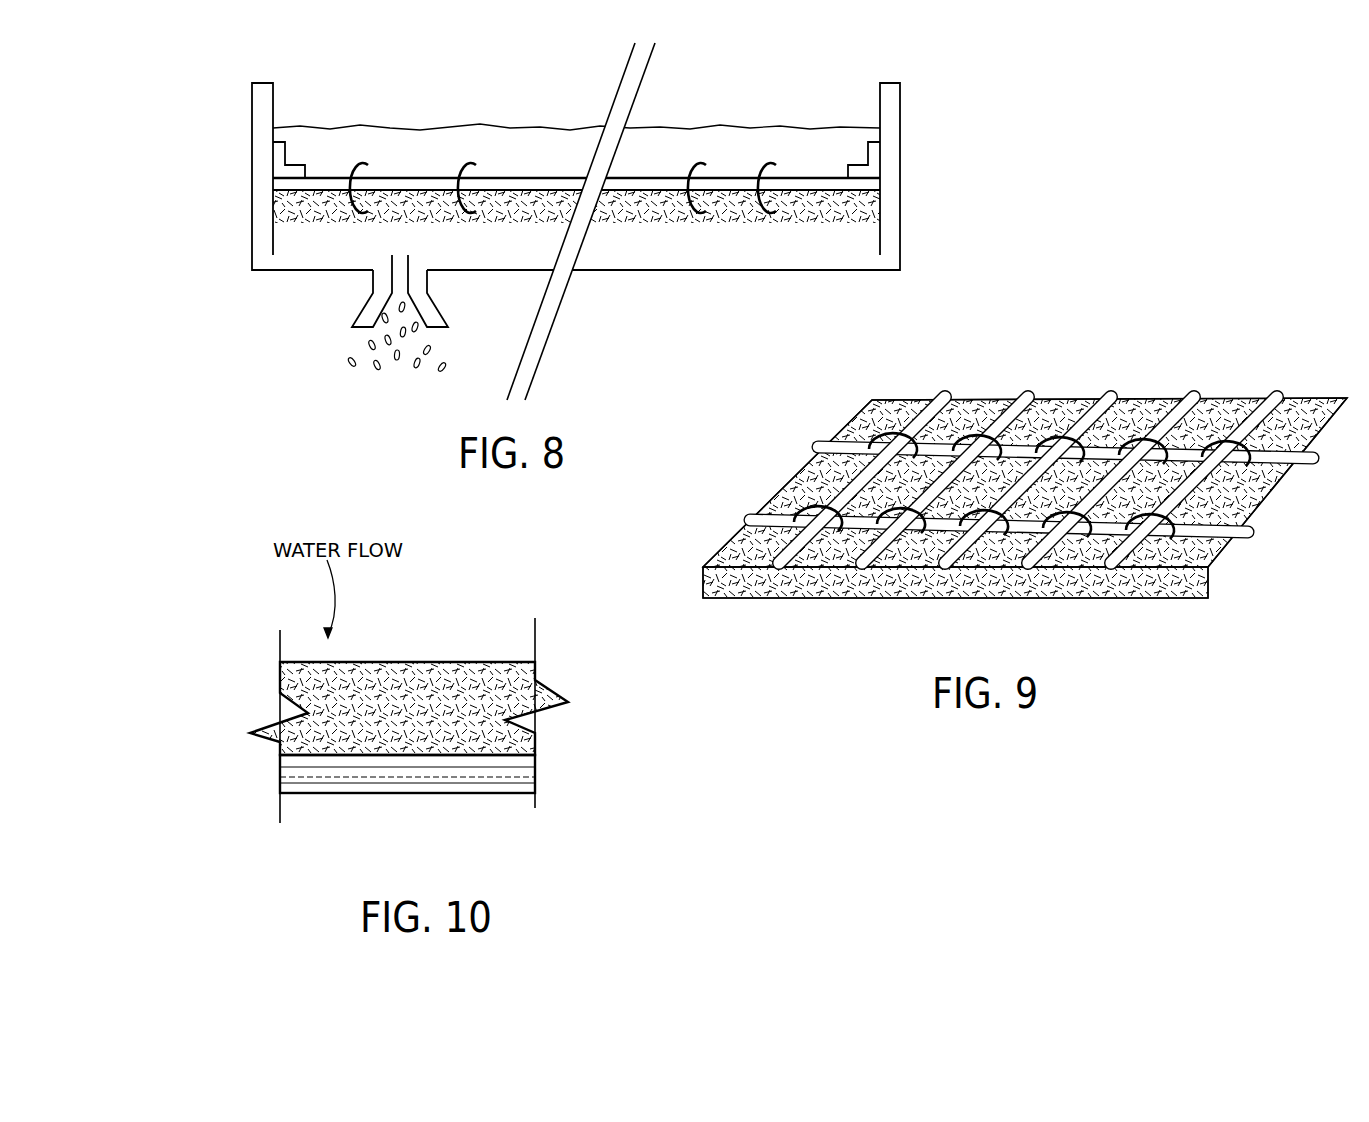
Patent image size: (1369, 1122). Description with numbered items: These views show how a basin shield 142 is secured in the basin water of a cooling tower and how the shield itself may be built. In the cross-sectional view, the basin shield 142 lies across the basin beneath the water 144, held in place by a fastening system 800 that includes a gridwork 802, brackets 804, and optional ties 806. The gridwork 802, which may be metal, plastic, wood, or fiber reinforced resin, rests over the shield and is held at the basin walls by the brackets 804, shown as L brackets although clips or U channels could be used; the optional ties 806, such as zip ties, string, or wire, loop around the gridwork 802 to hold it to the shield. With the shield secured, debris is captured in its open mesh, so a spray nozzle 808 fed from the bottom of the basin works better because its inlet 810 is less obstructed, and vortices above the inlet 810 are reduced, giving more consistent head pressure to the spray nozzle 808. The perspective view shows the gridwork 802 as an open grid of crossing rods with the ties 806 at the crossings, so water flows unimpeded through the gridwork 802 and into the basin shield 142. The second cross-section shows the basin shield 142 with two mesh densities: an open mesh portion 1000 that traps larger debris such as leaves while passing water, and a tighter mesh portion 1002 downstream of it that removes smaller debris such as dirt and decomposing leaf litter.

In FIG. 8, the basin shield 142 is at (300, 212).
In FIG. 9, the basin shield 142 is at (1153, 418).
In FIG. 10, the basin shield 142 is at (488, 735).
In FIG. 8, the water 144 is at (432, 80).
In FIG. 8, the fastening system 800 is at (237, 150).
In FIG. 9, the fastening system 800 is at (1088, 396).
In FIG. 8, the gridwork 802 is at (322, 177).
In FIG. 8, the bracket 804 is at (283, 170).
In FIG. 8, the ties 806 is at (354, 165).
In FIG. 9, the ties 806 is at (1219, 421).
In FIG. 8, the spray nozzle 808 is at (367, 302).
In FIG. 8, the inlet 810 is at (401, 248).
In FIG. 10, the open mesh portion 1000 is at (503, 695).
In FIG. 10, the tighter mesh portion 1002 is at (505, 772).